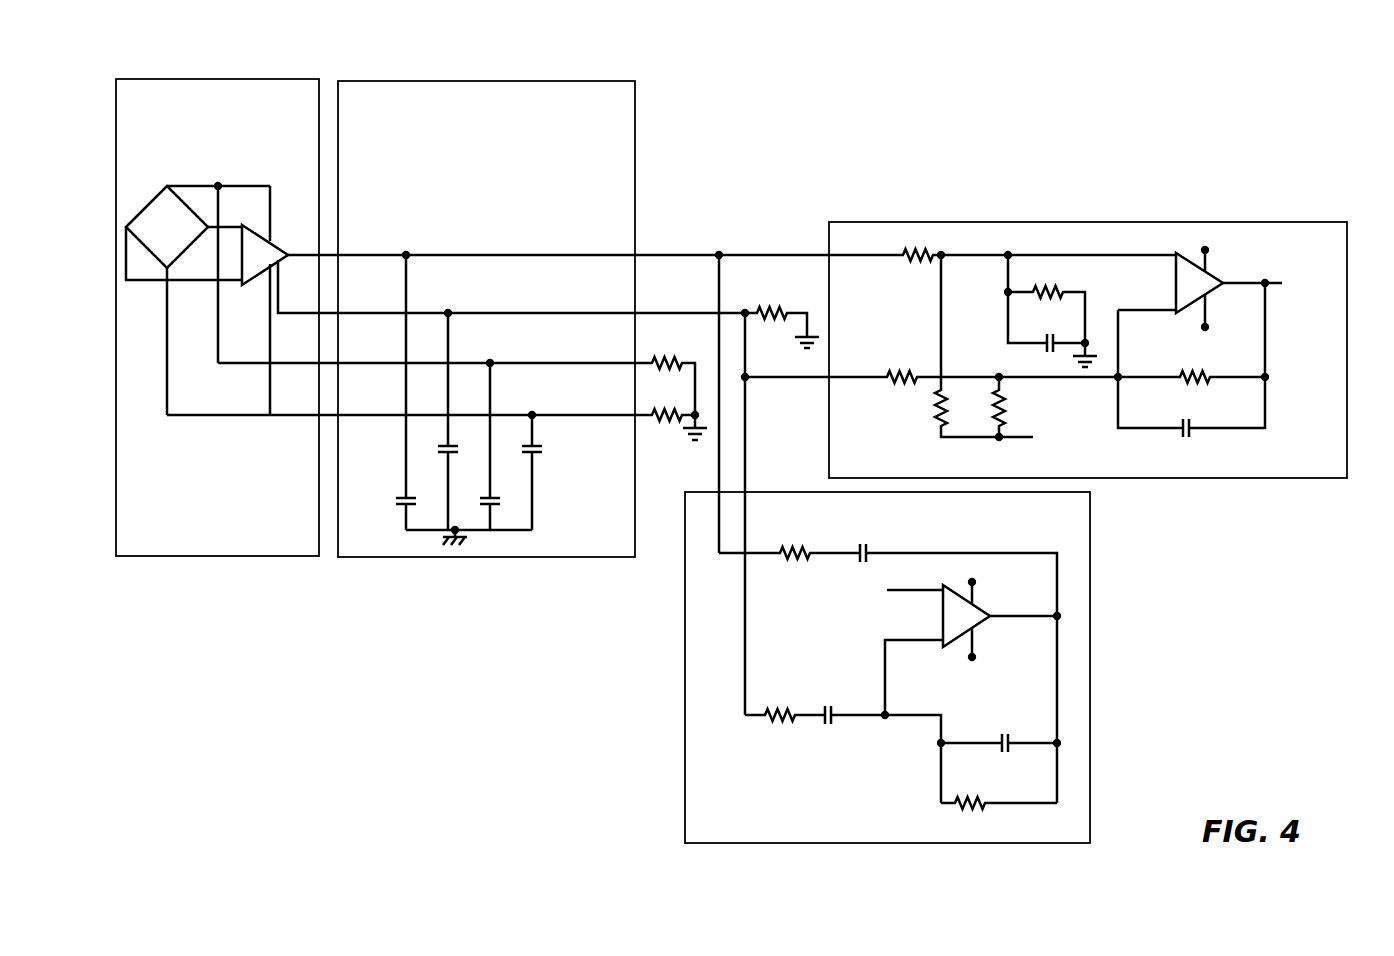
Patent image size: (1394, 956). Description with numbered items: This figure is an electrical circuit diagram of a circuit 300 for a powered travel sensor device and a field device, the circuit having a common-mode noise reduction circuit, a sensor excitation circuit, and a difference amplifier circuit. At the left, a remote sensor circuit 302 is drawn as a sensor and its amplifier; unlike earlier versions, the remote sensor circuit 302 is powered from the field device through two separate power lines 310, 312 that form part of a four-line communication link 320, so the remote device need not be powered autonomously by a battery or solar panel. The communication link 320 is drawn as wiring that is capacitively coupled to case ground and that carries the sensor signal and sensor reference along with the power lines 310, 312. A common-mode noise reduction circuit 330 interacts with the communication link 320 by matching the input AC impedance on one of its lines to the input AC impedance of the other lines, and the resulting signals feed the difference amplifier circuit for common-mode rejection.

The circuit 300 is at (762, 53).
The remote sensor circuit 302 is at (253, 79).
The power line 310 is at (369, 365).
The power line 312 is at (368, 418).
The communication link 320 is at (518, 150).
The common-mode noise reduction circuit 330 is at (1090, 624).